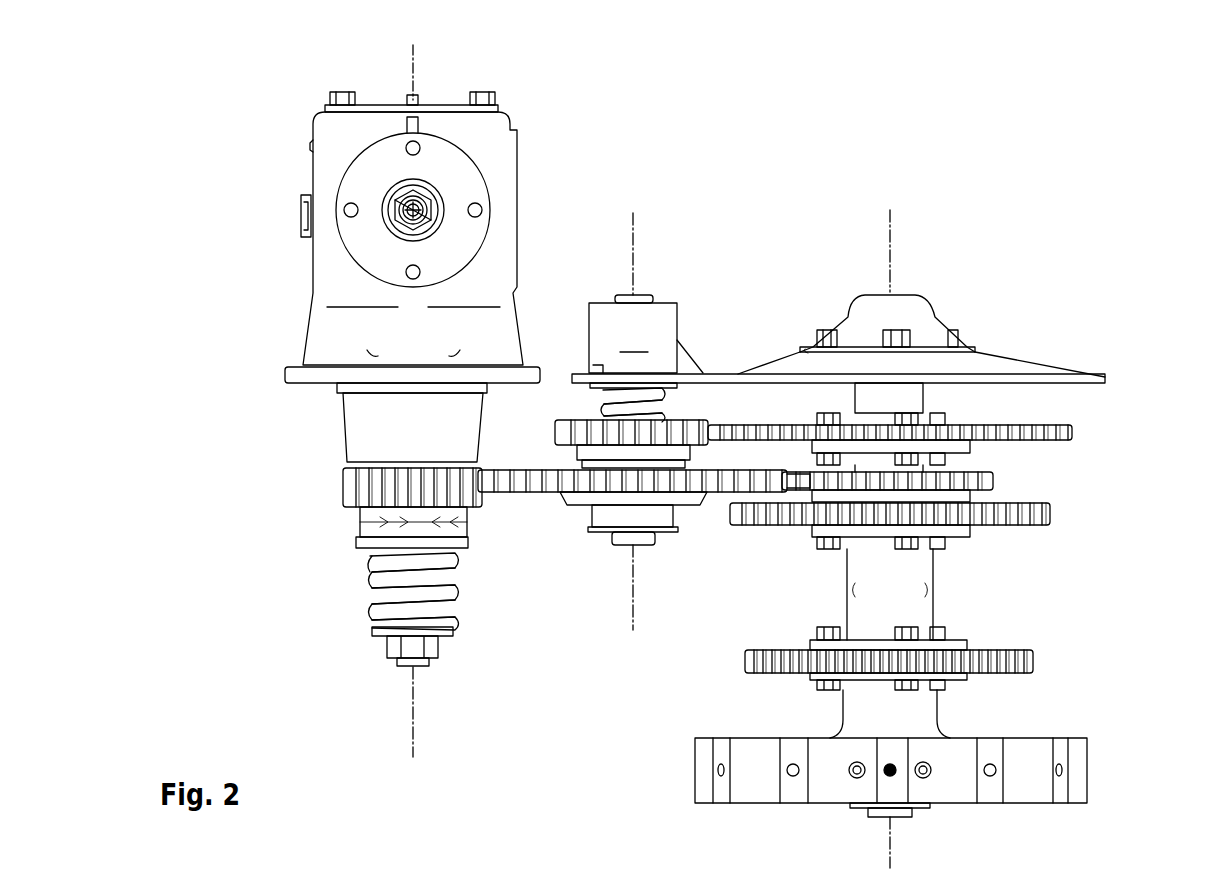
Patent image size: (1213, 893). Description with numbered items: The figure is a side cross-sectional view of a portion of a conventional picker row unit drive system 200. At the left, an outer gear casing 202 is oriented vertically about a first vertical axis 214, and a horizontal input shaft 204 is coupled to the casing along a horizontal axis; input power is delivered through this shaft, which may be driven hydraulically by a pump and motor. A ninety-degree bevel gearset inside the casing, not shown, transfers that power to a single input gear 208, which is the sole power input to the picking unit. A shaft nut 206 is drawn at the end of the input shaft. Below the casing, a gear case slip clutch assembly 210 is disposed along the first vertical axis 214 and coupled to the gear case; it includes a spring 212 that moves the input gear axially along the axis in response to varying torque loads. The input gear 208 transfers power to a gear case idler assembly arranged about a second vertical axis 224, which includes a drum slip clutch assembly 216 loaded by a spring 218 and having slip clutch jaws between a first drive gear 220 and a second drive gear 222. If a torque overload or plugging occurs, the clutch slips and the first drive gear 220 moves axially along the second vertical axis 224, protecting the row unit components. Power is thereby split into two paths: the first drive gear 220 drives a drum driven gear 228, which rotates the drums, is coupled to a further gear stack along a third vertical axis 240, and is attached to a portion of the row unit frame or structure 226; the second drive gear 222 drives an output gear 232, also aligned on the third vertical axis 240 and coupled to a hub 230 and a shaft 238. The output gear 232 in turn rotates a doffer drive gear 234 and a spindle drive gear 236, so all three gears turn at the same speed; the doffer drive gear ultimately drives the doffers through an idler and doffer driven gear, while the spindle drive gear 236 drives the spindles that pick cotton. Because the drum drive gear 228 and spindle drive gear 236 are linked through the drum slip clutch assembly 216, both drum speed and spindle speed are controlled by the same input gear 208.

The row unit drive system 200 is at (1025, 158).
The outer gear casing 202 is at (327, 265).
The horizontal input shaft 204 is at (425, 210).
The shaft nut 206 is at (398, 190).
The input gear 208 is at (347, 485).
The gear case slip clutch assembly 210 is at (312, 634).
The spring 212 is at (367, 592).
The first vertical axis 214 is at (414, 735).
The drum slip clutch assembly 216 is at (641, 289).
The spring 218 is at (667, 403).
The first drive gear 220 is at (571, 420).
The second drive gear 222 is at (520, 486).
The second vertical axis 224 is at (633, 608).
The row unit frame or structure 226 is at (1000, 357).
The drum driven gear 228 is at (1072, 433).
The hub 230 is at (960, 497).
The output gear 232 is at (993, 482).
The doffer drive gear 234 is at (1050, 513).
The spindle drive gear 236 is at (1033, 660).
The shaft 238 is at (917, 570).
The third vertical axis 240 is at (890, 845).